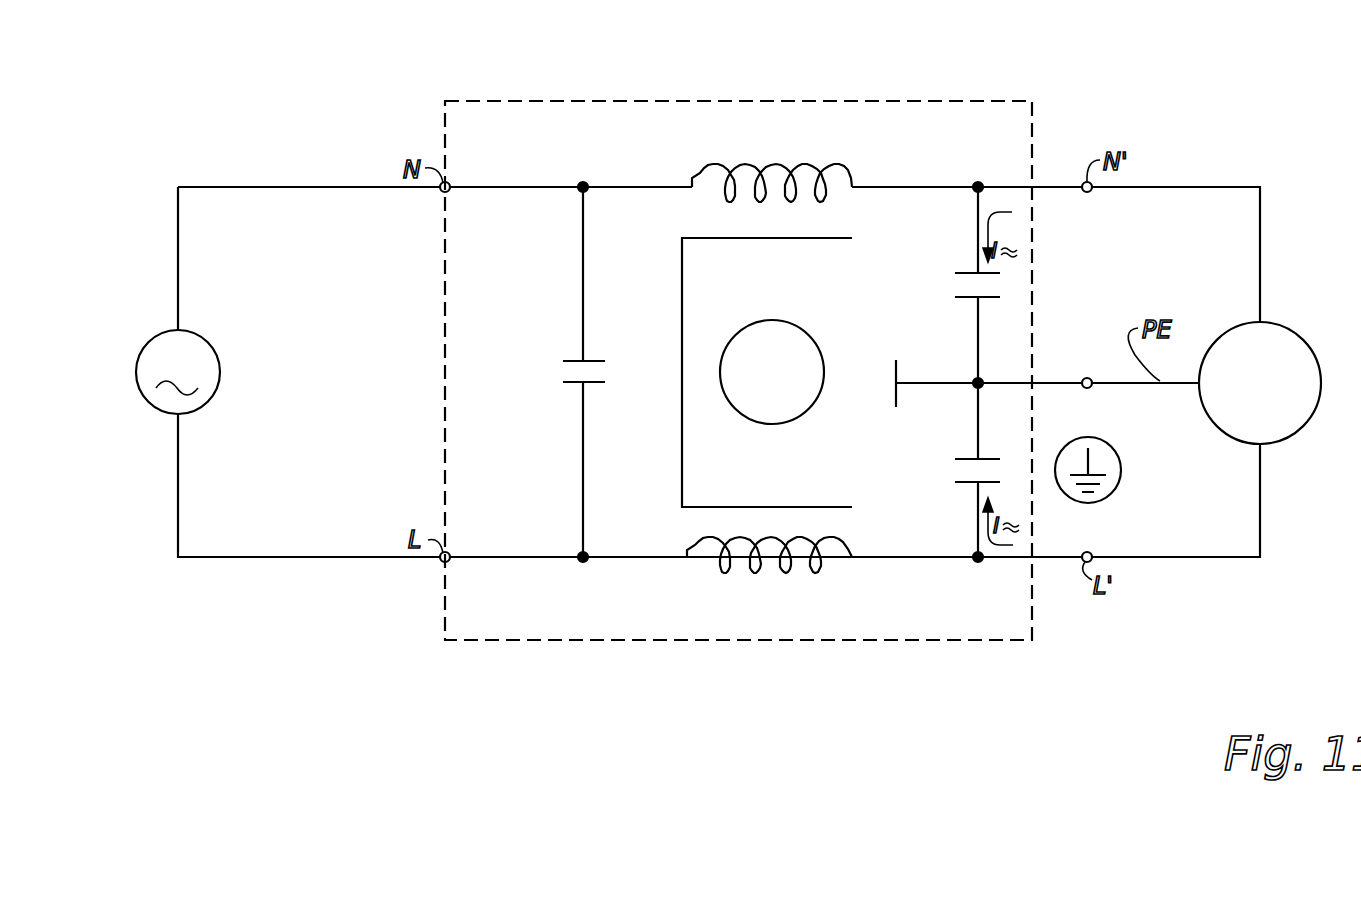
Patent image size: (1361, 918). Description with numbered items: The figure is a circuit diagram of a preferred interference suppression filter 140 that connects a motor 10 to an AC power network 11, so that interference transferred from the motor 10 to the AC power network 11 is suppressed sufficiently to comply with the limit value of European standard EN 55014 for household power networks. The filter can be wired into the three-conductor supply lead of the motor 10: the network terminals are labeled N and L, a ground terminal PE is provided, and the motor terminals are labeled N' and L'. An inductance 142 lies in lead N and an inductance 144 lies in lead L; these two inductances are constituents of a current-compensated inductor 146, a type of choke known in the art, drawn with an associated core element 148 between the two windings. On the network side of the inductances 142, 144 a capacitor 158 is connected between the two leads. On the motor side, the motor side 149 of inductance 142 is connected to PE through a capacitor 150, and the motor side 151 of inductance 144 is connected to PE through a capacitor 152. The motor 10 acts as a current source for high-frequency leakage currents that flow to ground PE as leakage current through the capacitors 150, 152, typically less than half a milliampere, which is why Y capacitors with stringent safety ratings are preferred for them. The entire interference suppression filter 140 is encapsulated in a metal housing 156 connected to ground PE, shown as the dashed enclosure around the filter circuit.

The motor 10 is at (1292, 332).
The AC power network 11 is at (208, 330).
The interference suppression filter 140 is at (432, 91).
The inductance 142 is at (690, 168).
The inductance 144 is at (692, 565).
The current-compensated inductor 146 is at (790, 125).
The choke core 148 is at (684, 297).
The motor side of inductance 142 149 is at (908, 185).
The capacitor 150 is at (958, 285).
The motor side of inductance 144 151 is at (897, 562).
The capacitor 152 is at (958, 470).
The metal housing 156 is at (545, 642).
The capacitor 158 is at (563, 368).